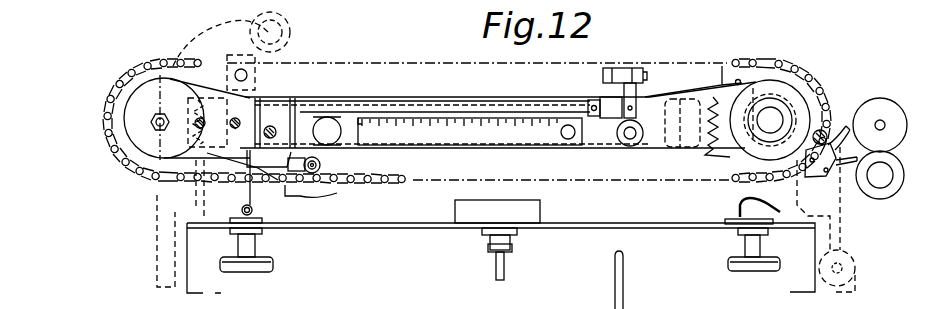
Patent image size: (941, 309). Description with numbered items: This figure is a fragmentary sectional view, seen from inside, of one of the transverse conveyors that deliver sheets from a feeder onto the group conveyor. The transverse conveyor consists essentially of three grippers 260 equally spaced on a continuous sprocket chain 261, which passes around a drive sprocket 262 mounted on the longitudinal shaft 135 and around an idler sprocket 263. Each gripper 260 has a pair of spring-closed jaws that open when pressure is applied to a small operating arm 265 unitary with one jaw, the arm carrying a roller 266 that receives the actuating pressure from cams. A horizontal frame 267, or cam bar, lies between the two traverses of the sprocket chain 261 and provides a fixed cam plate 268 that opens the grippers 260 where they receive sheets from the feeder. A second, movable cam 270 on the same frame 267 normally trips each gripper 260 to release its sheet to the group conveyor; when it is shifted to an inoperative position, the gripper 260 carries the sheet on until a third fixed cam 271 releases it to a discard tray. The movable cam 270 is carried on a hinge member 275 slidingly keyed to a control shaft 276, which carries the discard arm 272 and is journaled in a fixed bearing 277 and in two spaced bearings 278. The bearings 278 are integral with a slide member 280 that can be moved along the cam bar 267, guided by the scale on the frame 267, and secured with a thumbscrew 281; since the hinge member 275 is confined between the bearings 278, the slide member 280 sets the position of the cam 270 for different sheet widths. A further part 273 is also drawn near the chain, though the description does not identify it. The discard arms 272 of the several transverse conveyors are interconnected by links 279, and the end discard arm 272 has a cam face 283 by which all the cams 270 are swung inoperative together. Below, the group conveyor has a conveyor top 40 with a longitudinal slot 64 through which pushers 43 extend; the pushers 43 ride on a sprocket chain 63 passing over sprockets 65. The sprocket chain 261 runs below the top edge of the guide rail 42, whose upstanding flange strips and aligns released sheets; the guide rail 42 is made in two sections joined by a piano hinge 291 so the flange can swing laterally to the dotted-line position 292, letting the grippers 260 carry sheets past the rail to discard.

The third fixed cam 271 is at (145, 95).
The idler sprocket 263 is at (124, 156).
The second cam 270 is at (176, 185).
The dotted-line position of guide rail flange 292 is at (237, 197).
The piano hinge 291 is at (240, 222).
The guide rail 42 is at (262, 206).
The bracket 273 is at (300, 196).
The gripper 260 is at (326, 204).
The sprocket chain 261 is at (398, 186).
The operating arm 265 is at (322, 164).
The roller 266 is at (320, 157).
The hinge member 275 is at (278, 122).
The spaced bearings 278 is at (325, 128).
The slide member 280 is at (331, 117).
The thumbscrew 281 is at (336, 109).
The control shaft 276 is at (512, 112).
The fixed bearing 277 is at (608, 104).
The cam face 283 is at (630, 80).
The discard arm 272 is at (628, 95).
The horizontal frame 267 is at (597, 148).
The drive sprocket 262 is at (722, 156).
The longitudinal shaft 135 is at (768, 112).
The fixed cam 268 is at (811, 97).
The conveyor top 40 is at (413, 226).
The longitudinal slot 64 is at (497, 212).
The pusher 43 is at (540, 210).
The sprocket 65 is at (494, 252).
The sprocket chain 63 is at (513, 243).
The link 279 is at (623, 300).